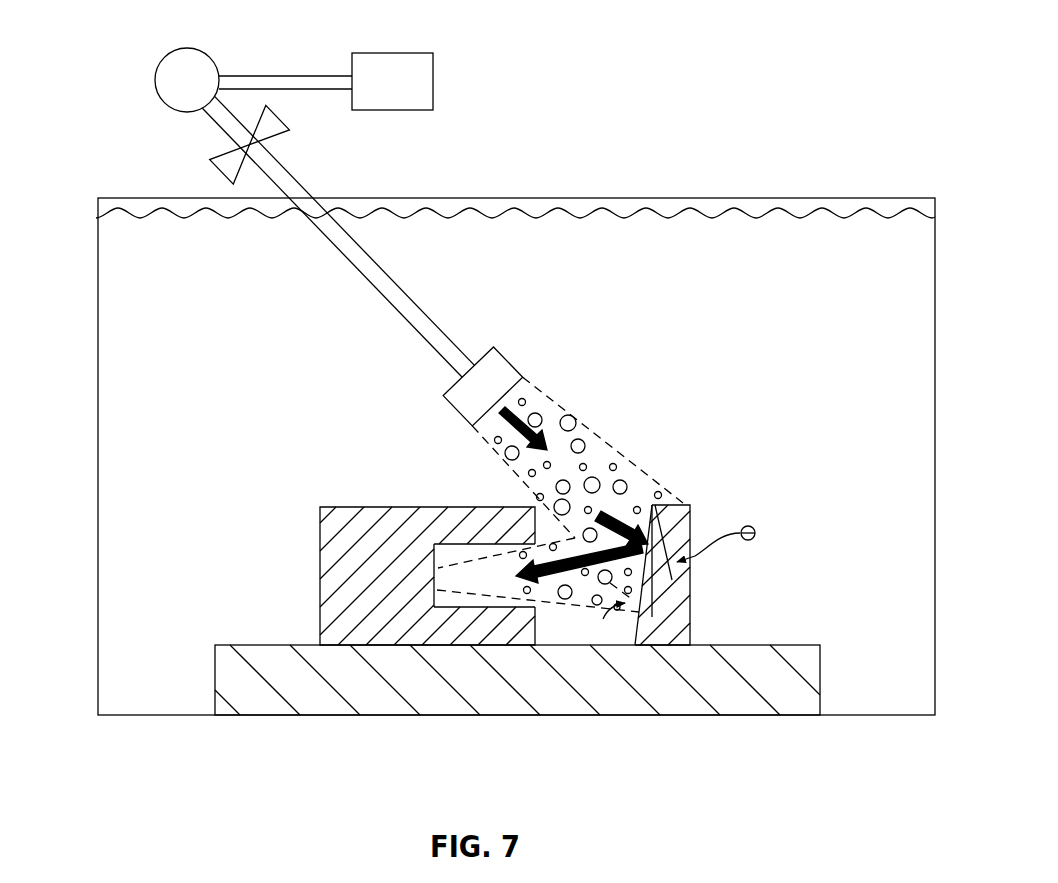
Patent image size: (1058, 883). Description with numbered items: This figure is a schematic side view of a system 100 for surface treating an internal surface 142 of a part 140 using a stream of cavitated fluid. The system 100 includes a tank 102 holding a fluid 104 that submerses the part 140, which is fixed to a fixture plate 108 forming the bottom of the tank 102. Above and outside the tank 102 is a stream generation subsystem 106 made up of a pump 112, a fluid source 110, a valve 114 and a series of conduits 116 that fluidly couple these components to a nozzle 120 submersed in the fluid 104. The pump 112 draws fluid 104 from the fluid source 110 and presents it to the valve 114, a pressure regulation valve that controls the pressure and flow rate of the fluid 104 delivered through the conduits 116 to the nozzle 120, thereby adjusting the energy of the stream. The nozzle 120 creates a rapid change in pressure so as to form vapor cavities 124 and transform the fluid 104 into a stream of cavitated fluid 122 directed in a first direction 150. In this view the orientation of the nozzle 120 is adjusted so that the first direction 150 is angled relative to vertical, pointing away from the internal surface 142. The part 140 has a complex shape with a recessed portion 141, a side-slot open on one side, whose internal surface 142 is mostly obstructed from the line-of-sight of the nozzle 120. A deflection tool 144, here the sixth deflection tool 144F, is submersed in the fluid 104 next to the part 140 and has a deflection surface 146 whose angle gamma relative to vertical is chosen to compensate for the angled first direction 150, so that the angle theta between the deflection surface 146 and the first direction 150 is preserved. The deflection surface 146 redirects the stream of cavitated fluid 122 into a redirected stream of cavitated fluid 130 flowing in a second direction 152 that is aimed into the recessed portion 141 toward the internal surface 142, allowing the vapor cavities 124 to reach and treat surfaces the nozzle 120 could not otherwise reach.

The system 100 is at (875, 162).
The tank 102 is at (97, 393).
The fluid 104 is at (663, 213).
The stream generation subsystem 106 is at (138, 61).
The fixture plate 108 is at (232, 645).
The fluid source 110 is at (432, 80).
The pump 112 is at (191, 49).
The valve 114 is at (282, 121).
The conduits 116 is at (277, 76).
The nozzle 120 is at (490, 358).
The stream of cavitated fluid 122 is at (579, 406).
The vapor cavities 124 is at (585, 443).
The redirected stream of cavitated fluid 130 is at (463, 600).
The part 140 is at (332, 504).
The recessed portion 141 is at (471, 547).
The internal surface 142 is at (438, 604).
The deflection tool 144 is at (696, 617).
The sixth deflection tool 144F is at (674, 588).
The deflection surface 146 is at (651, 506).
The first direction 150 is at (528, 406).
The second direction 152 is at (565, 568).